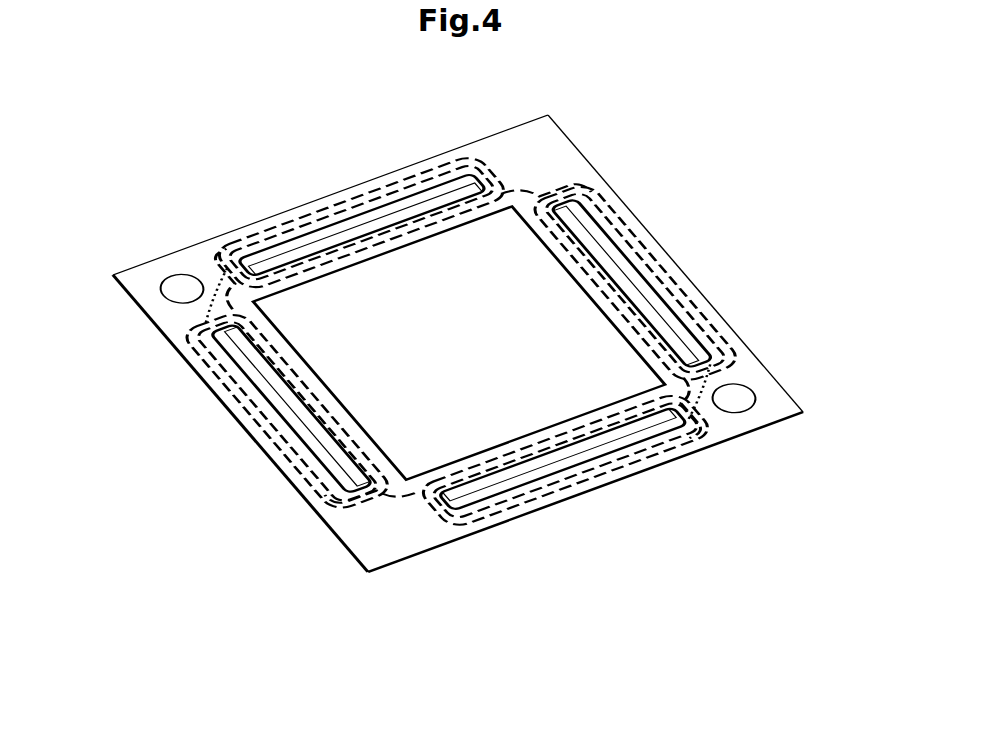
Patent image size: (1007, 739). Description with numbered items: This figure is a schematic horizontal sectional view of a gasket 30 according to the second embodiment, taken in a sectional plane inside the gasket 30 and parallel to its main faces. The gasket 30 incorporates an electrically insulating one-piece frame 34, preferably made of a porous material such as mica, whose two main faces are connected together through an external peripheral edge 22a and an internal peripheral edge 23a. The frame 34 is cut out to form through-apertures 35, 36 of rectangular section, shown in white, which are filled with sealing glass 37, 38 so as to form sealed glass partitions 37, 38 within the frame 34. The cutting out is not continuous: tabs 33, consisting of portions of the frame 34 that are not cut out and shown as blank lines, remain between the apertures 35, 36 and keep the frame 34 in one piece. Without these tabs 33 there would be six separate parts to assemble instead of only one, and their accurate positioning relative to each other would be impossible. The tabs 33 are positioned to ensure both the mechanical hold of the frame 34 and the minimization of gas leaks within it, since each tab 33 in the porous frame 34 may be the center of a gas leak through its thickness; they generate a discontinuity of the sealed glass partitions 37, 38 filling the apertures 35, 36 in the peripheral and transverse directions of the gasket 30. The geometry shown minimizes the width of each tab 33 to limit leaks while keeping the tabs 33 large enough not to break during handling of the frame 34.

The gasket 30 is at (458, 371).
The external peripheral edge 22a is at (675, 263).
The internal peripheral edge 23a is at (459, 342).
The tabs 33 is at (262, 542).
The frame 34 is at (240, 423).
The aperture 35 is at (462, 346).
The aperture 36 is at (362, 224).
The sealing glass 37 is at (461, 346).
The sealing glass 38 is at (463, 342).